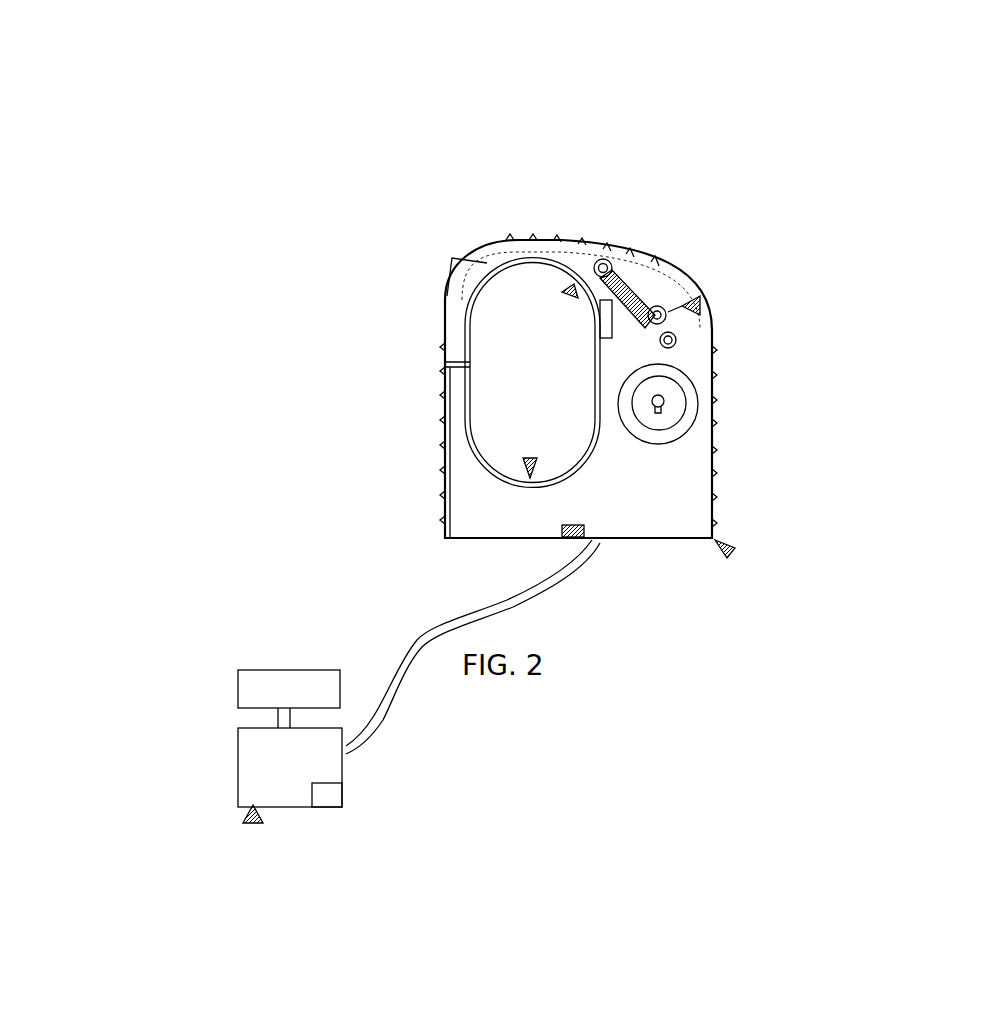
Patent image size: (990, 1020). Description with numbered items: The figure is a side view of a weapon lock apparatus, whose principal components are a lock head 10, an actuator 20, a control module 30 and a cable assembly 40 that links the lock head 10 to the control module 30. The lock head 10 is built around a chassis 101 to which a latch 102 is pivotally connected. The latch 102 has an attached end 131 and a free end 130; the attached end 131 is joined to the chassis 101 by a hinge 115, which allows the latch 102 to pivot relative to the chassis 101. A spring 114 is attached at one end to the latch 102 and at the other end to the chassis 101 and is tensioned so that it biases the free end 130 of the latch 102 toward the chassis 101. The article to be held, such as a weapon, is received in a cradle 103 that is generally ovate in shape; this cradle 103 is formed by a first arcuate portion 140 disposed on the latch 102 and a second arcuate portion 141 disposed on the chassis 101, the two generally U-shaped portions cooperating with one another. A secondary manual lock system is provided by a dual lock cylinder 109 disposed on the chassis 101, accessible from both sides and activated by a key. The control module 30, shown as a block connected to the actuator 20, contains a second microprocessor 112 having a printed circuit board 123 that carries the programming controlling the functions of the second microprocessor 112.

The lock head 10 is at (580, 364).
The actuator 20 is at (238, 697).
The control module 30 is at (250, 826).
The cable assembly 40 is at (560, 583).
The chassis 101 is at (443, 537).
The latch 102 is at (538, 252).
The cradle 103 is at (533, 372).
The dual lock cylinder 109 is at (672, 407).
The second microprocessor 112 is at (311, 829).
The spring 114 is at (634, 268).
The hinge 115 is at (702, 303).
The printed circuit board 123 is at (327, 805).
The free end 130 is at (453, 353).
The attached end 131 is at (622, 262).
The first arcuate portion 140 is at (564, 292).
The second arcuate portion 141 is at (527, 458).